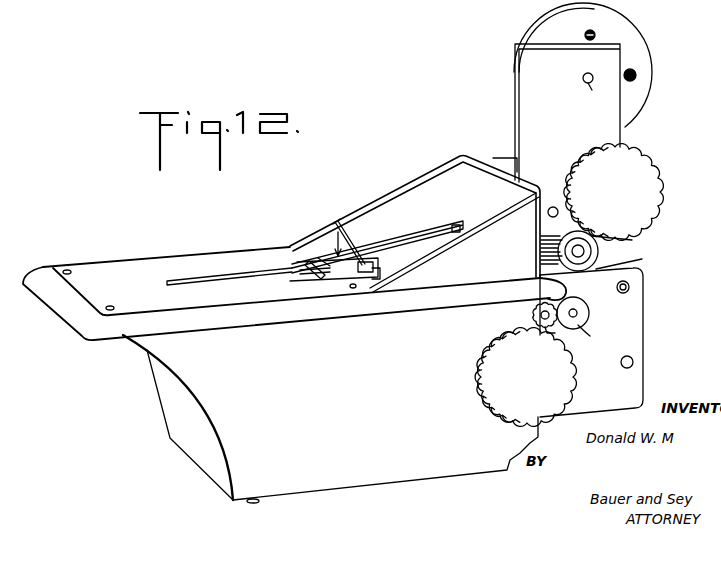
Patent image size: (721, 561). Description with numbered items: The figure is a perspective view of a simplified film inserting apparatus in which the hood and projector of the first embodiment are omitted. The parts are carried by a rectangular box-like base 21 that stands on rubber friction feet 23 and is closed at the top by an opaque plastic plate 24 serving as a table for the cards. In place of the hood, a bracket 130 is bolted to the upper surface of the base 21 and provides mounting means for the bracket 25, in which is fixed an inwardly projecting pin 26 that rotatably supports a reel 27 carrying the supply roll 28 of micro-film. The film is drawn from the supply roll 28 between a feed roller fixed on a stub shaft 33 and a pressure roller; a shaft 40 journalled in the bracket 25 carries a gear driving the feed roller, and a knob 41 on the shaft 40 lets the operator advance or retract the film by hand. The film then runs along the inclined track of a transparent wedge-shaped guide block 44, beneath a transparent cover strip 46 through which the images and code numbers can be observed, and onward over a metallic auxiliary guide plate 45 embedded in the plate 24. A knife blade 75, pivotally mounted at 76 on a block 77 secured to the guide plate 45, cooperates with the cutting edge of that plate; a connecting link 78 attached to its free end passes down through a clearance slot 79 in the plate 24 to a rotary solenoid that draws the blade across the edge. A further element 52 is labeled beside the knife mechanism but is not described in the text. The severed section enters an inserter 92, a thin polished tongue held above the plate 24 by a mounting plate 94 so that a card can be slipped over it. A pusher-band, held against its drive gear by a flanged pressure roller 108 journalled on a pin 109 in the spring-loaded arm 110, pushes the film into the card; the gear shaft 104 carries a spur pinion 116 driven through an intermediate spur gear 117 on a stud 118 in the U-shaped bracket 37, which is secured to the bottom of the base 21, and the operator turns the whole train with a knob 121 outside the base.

The base 21 is at (107, 327).
The rubber friction feet 23 is at (257, 503).
The plate 24 is at (102, 272).
The bracket 25 is at (607, 137).
The pin 26 is at (586, 93).
The reel 27 is at (637, 90).
The supply roll 28 is at (633, 72).
The stub shaft 33 is at (553, 207).
The U-shaped bracket 37 is at (632, 335).
The shaft 40 is at (572, 167).
The knob 41 is at (637, 173).
The guide block 44 is at (397, 265).
The auxiliary guide plate 45 is at (333, 278).
The cover strip 46 is at (410, 250).
The lever 52 is at (323, 260).
The knife blade 75 is at (348, 228).
The pivot 76 is at (347, 278).
The block 77 is at (373, 278).
The connecting link 78 is at (337, 237).
The clearance slot 79 is at (345, 260).
The inserter 92 is at (194, 281).
The mounting plate 94 is at (310, 275).
The shaft 104 is at (582, 330).
The flanged pressure roller 108 is at (540, 248).
The pin 109 is at (580, 262).
The arm 110 is at (597, 262).
The spur pinion 116 is at (590, 315).
The intermediate spur gear 117 is at (550, 335).
The stud 118 is at (533, 313).
The knob 121 is at (510, 397).
The bracket 130 is at (430, 170).